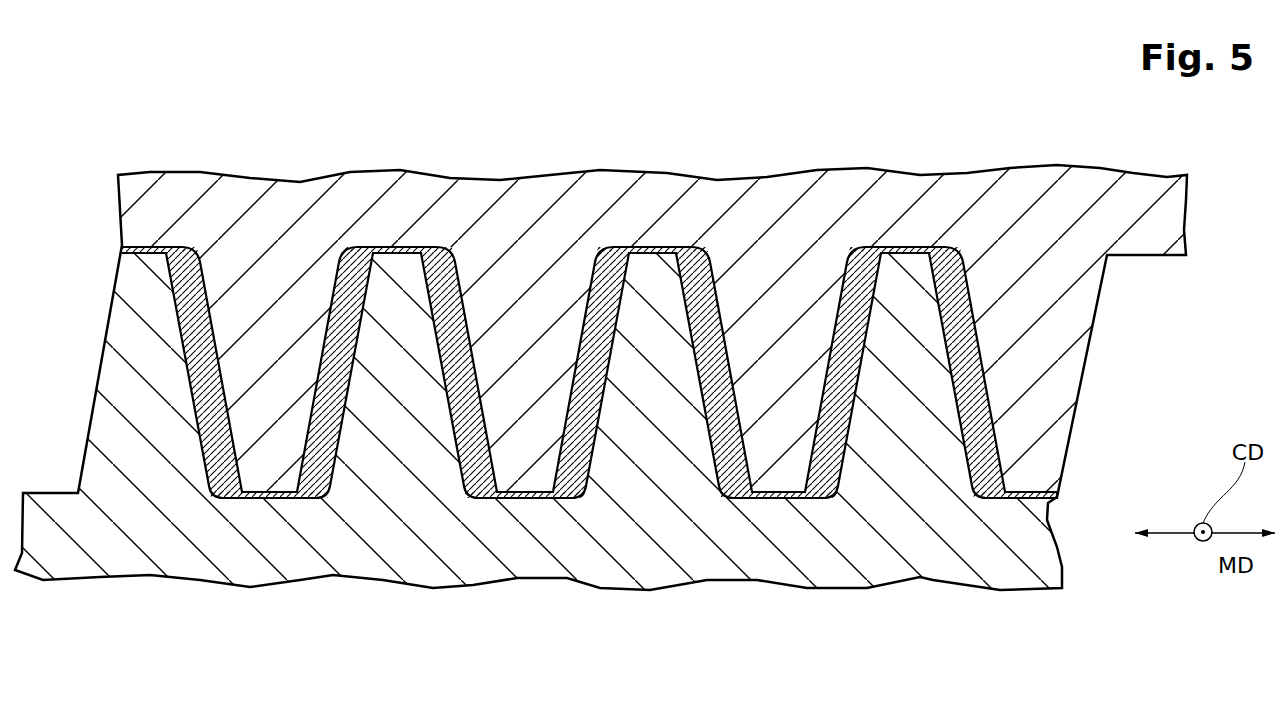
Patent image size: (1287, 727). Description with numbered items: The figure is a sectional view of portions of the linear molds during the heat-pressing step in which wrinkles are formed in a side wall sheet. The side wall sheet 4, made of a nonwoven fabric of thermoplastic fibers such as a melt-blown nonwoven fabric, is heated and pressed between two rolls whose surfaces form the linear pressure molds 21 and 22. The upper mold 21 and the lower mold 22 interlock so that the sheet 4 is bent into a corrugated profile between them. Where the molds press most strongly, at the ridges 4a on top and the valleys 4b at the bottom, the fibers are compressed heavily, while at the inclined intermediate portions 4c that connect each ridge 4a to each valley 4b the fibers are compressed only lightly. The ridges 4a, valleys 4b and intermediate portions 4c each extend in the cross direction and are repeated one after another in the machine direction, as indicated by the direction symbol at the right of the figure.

The side wall sheet 4 is at (589, 378).
The ridges 4a is at (390, 246).
The valleys 4b is at (527, 498).
The intermediate portions 4c is at (583, 303).
The linear pressure mold 21 is at (897, 217).
The linear pressure mold 22 is at (817, 553).